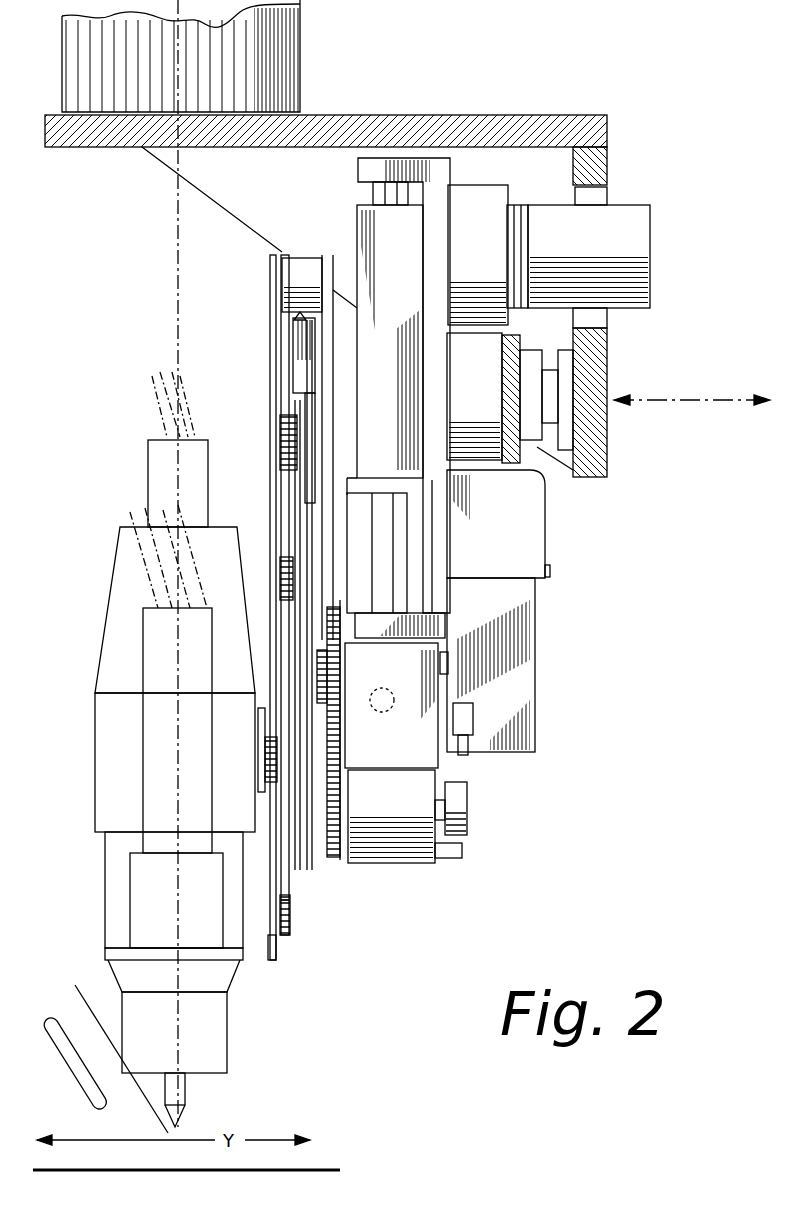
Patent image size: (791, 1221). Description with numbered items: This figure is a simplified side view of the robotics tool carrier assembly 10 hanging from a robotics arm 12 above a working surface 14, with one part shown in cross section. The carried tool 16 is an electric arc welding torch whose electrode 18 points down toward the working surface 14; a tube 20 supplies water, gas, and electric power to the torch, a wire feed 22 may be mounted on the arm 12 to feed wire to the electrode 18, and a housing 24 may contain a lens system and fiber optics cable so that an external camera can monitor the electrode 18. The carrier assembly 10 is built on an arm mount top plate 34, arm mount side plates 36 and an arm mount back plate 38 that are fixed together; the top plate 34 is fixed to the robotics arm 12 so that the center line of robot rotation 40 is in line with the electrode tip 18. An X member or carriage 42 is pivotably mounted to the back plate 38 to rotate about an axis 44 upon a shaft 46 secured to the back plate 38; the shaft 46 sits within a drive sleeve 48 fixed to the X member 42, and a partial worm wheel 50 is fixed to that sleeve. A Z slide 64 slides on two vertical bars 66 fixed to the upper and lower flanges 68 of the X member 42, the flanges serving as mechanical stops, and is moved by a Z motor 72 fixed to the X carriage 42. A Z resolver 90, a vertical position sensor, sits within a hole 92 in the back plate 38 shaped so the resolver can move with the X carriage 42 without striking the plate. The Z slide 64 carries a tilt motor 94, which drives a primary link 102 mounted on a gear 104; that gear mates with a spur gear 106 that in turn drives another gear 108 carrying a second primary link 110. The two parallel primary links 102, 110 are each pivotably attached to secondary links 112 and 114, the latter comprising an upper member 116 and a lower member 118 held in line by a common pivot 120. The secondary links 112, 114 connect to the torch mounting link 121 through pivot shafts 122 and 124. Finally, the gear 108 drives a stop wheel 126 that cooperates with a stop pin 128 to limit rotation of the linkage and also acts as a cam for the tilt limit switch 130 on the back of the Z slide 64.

The robotics tool carrier assembly 10 is at (700, 652).
The robotics arm 12 is at (303, 32).
The working surface 14 is at (330, 1168).
The tool 16 is at (98, 858).
The electrode 18 is at (185, 1090).
The tube 20 is at (145, 798).
The wire feed 22 is at (115, 1085).
The housing 24 is at (97, 757).
The arm mount top plate 34 is at (524, 124).
The arm mount side plates 36 is at (162, 162).
The arm mount back plate 38 is at (607, 357).
The center line of robot rotation 40 is at (172, 250).
The X member 42 is at (358, 168).
The axis 44 is at (740, 400).
The shaft 46 is at (550, 370).
The drive sleeve 48 is at (550, 448).
The partial worm wheel 50 is at (505, 395).
The Z slide 64 is at (404, 316).
The vertical extending bars 66 is at (402, 545).
The upper and lower flanges 68 is at (372, 190).
The Z motor 72 is at (532, 658).
The Z resolver 90 is at (655, 235).
The hole 92 is at (605, 190).
The tilt motor 94 is at (440, 682).
The primary link 102 is at (300, 258).
The gear 104 is at (345, 665).
The spur gear 106 is at (335, 732).
The gear 108 is at (350, 795).
The primary link 110 is at (290, 345).
The secondary link 112 is at (270, 378).
The secondary link 114 is at (290, 875).
The upper member 116 is at (300, 482).
The lower member 118 is at (290, 925).
The common pivot 120 is at (290, 598).
The torch mounting link 121 is at (270, 935).
The pivot shaft 122 is at (265, 752).
The pivot shaft 124 is at (284, 905).
The stop wheel 126 is at (470, 800).
The stop pin 128 is at (455, 857).
The tilt limit switch 130 is at (475, 720).